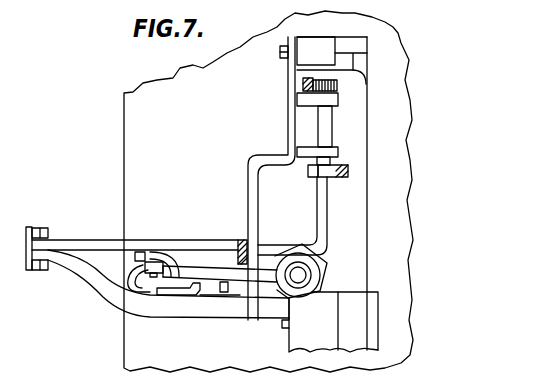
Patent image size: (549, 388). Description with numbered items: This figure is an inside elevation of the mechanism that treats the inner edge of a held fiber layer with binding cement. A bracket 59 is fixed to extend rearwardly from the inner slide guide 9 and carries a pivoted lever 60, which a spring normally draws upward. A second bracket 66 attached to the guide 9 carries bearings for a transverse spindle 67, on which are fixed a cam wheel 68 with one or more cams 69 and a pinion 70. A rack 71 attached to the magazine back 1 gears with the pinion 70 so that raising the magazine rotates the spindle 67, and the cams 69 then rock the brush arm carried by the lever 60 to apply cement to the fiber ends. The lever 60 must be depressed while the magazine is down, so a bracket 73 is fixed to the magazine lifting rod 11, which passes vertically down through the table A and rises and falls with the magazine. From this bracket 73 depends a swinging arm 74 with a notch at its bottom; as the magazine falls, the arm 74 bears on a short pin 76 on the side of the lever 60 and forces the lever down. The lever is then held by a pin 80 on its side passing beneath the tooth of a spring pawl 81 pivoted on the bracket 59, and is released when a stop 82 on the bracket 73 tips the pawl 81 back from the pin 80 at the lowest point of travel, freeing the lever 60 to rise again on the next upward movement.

The magazine back 1 is at (353, 72).
The inner slide guide 9 is at (333, 322).
The rod 11 is at (302, 275).
The bracket 59 is at (76, 270).
The lever 60 is at (327, 213).
The second bracket 66 is at (288, 137).
The transverse spindle 67 is at (325, 133).
The cam wheel 68 is at (310, 171).
The cams 69 is at (348, 172).
The pinion 70 is at (338, 87).
The rack 71 is at (303, 84).
The bracket 73 is at (180, 258).
The swinging arm 74 is at (157, 253).
The short pin 76 is at (134, 256).
The pin 80 is at (187, 252).
The spring pawl 81 is at (200, 292).
The stop 82 is at (225, 293).
The table A is at (210, 131).